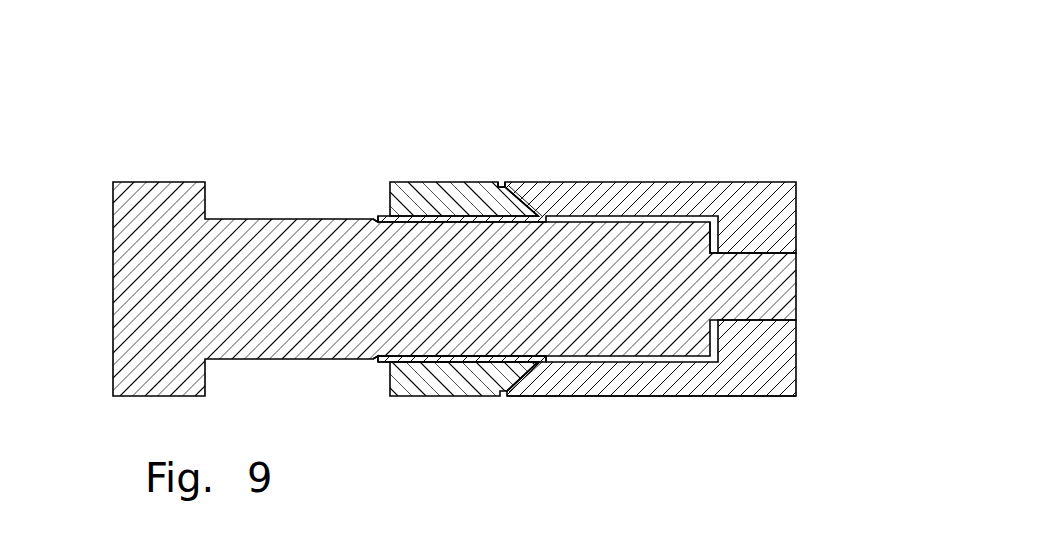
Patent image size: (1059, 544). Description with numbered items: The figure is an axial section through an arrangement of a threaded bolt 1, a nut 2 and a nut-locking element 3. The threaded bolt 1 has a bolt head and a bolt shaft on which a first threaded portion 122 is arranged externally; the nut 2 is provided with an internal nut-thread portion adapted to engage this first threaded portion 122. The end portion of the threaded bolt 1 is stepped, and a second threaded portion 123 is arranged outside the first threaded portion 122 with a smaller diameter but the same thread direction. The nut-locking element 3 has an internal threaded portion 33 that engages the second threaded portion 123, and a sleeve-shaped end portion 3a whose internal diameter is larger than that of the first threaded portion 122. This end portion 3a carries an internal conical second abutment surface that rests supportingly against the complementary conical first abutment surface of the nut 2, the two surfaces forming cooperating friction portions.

The threaded bolt 1 is at (267, 163).
The nut 2 is at (443, 167).
The nut-locking element 3 is at (663, 165).
The first threaded portion 122 is at (376, 214).
The second threaded portion 123 is at (717, 238).
The internal threaded portion 33 is at (760, 256).
The sleeve-shaped end portion 3a is at (622, 397).